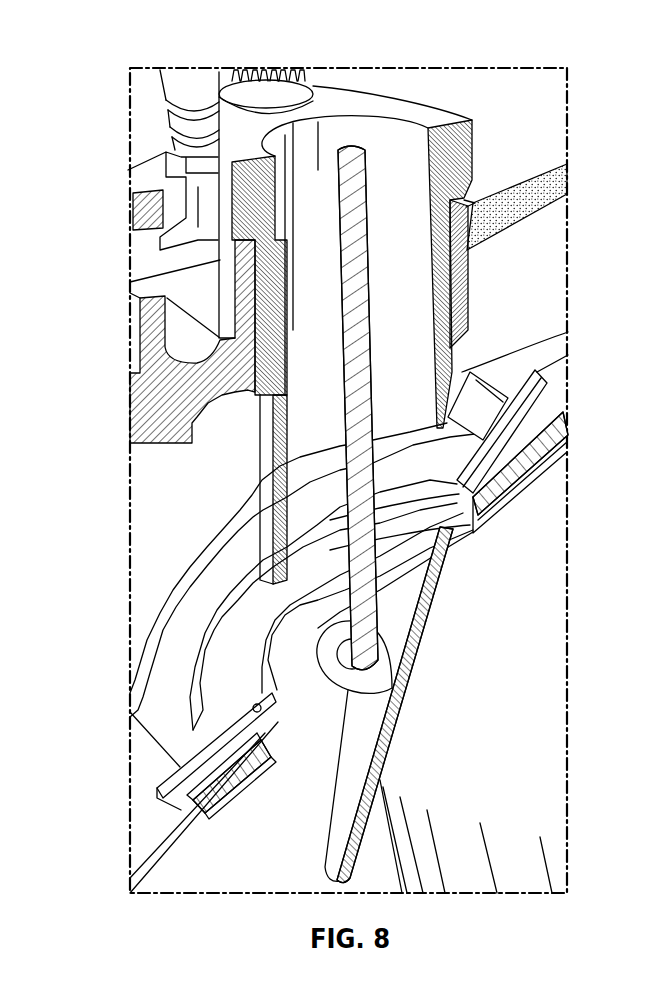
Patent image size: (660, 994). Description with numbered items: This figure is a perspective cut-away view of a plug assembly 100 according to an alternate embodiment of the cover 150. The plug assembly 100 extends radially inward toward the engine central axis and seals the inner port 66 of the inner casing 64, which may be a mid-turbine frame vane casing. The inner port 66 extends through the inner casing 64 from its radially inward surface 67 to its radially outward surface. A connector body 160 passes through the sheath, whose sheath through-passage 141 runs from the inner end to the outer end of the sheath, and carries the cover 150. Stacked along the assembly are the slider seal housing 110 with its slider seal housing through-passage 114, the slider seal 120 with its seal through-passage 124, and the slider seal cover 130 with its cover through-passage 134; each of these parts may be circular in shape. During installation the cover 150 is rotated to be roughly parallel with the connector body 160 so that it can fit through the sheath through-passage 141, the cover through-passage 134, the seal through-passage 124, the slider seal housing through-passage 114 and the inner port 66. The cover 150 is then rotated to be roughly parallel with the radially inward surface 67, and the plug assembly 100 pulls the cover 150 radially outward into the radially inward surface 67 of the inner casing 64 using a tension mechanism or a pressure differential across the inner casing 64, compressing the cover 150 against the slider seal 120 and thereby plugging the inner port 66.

The plug assembly 100 is at (117, 62).
The connector body 160 is at (362, 182).
The sheath through-passage 141 is at (473, 183).
The slider seal cover 130 is at (463, 395).
The slider seal 120 is at (547, 397).
The slider seal housing 110 is at (537, 447).
The radially inward surface 67 is at (497, 512).
The inner port 66 is at (470, 530).
The cover through-passage 134 is at (237, 573).
The seal through-passage 124 is at (278, 695).
The slider seal housing through-passage 114 is at (268, 743).
The cover 150 is at (381, 771).
The inner casing 64 is at (170, 860).